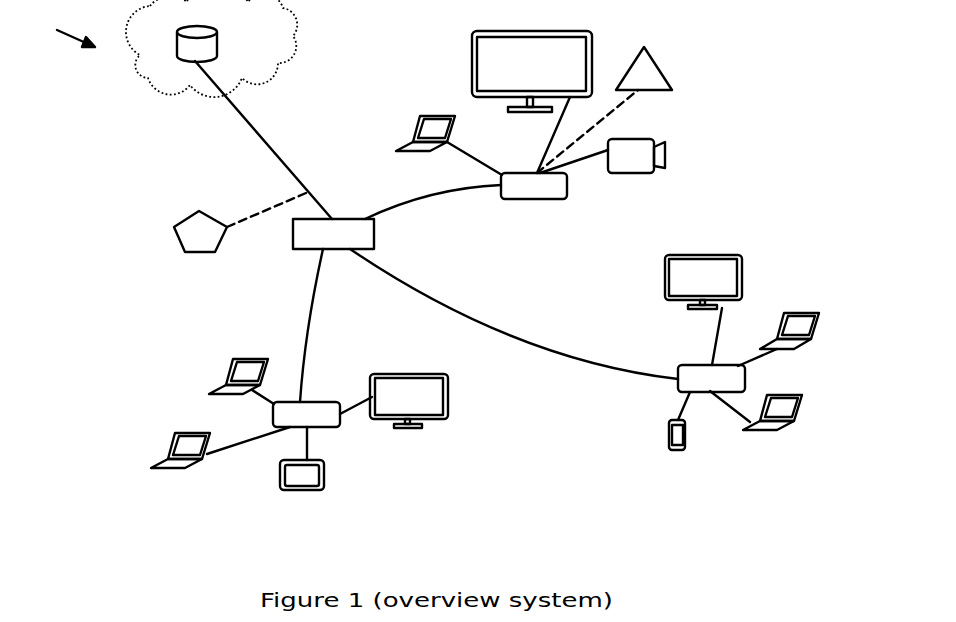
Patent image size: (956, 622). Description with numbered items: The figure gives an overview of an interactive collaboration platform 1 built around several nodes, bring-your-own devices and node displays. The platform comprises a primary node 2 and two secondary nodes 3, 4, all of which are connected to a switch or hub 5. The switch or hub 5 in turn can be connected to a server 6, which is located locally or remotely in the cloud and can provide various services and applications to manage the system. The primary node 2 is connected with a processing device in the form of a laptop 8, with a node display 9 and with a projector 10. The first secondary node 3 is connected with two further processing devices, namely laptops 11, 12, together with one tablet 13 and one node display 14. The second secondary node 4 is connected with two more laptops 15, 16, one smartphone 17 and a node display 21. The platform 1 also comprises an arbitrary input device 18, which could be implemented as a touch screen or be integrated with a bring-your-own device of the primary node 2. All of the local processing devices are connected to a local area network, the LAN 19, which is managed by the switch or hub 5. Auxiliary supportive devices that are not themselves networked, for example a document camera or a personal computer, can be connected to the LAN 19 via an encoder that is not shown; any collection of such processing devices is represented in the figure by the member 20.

The interactive collaboration platform 1 is at (70, 28).
The primary node 2 is at (500, 193).
The secondary node 3 is at (343, 422).
The secondary node 4 is at (680, 365).
The switch or hub 5 is at (374, 223).
The server 6 is at (210, 30).
The laptop 8 is at (433, 116).
The node display 9 is at (522, 31).
The projector 10 is at (641, 139).
The laptop 11 is at (258, 359).
The laptop 12 is at (190, 433).
The tablet 13 is at (280, 474).
The node display 14 is at (398, 374).
The laptop 15 is at (814, 313).
The laptop 16 is at (782, 395).
The smartphone 17 is at (669, 433).
The arbitrary input device 18 is at (652, 57).
The local area network (LAN) 19 is at (254, 128).
The member representing collection of processing devices 20 is at (185, 213).
The node display 21 is at (697, 255).